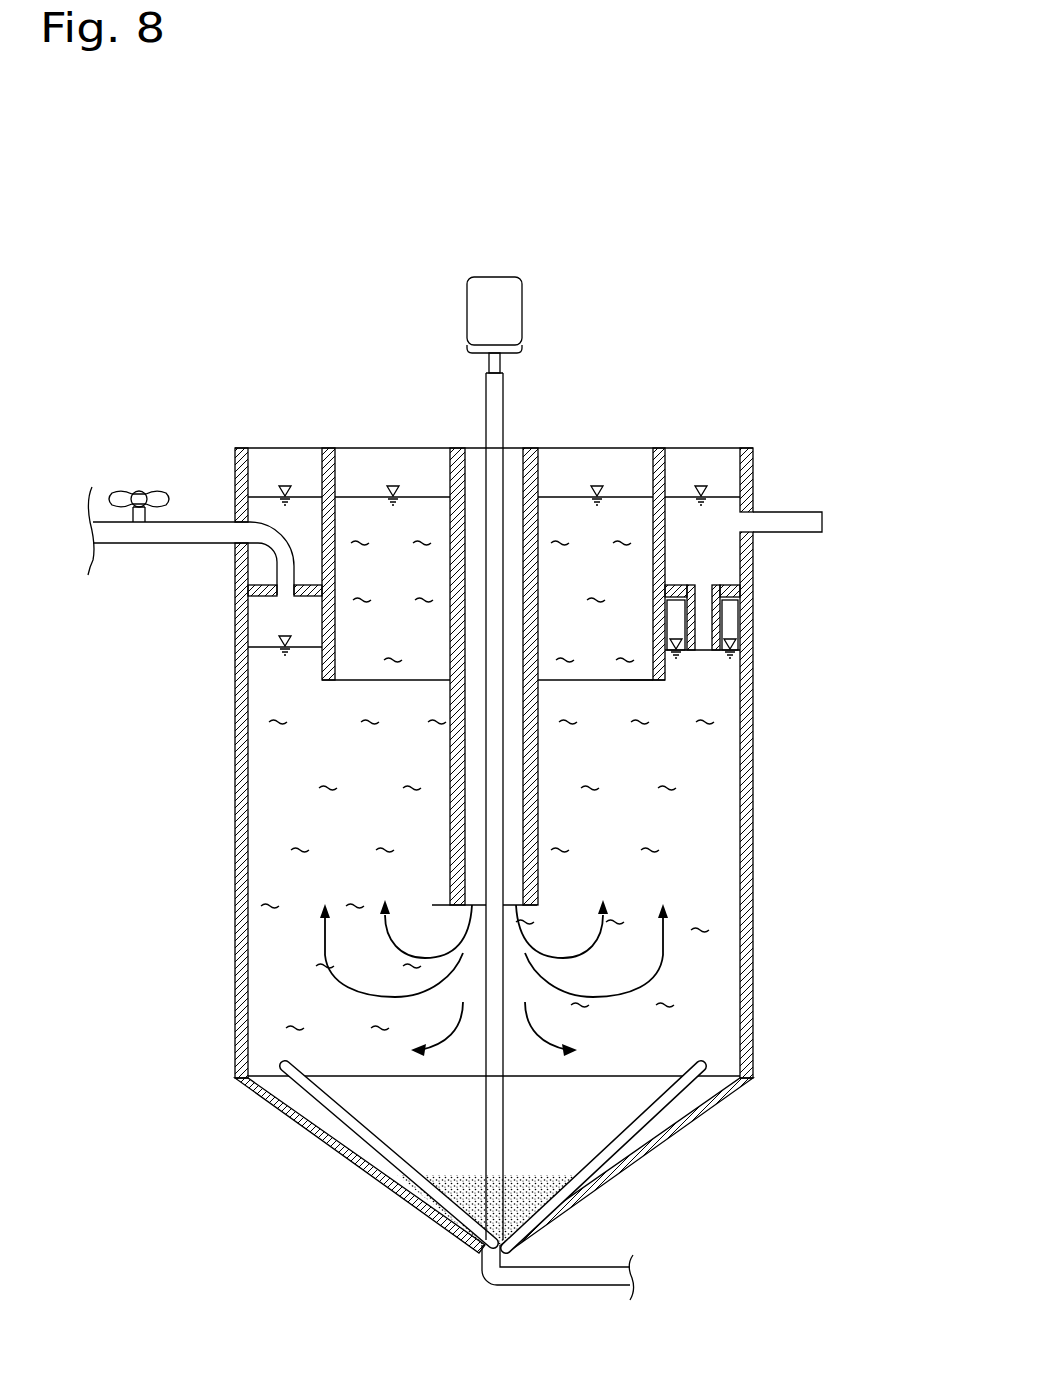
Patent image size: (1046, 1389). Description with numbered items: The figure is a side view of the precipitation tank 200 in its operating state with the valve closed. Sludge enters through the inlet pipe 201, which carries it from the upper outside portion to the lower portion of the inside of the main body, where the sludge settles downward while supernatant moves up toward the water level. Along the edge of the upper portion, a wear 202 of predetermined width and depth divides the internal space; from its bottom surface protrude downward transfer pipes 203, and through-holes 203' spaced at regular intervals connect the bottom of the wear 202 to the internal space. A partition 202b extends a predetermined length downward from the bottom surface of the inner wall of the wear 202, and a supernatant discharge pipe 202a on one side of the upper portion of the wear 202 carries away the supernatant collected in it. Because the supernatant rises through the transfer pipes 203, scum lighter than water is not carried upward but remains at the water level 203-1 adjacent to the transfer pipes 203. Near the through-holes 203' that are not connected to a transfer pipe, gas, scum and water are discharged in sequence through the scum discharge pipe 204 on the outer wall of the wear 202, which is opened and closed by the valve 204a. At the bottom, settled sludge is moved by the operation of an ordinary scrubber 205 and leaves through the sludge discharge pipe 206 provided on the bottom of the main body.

The precipitation tank 200 is at (745, 310).
The inlet pipe 201 is at (477, 457).
The wear 202 is at (720, 543).
The supernatant discharge pipe 202a is at (788, 518).
The partition 202b is at (657, 660).
The transfer pipe 203 is at (762, 617).
The water level 203-1 is at (712, 652).
The through-hole 203' is at (223, 594).
The scum discharge pipe 204 is at (208, 528).
The valve 204a is at (140, 490).
The scrubber 205 is at (500, 395).
The sludge discharge pipe 206 is at (551, 1292).